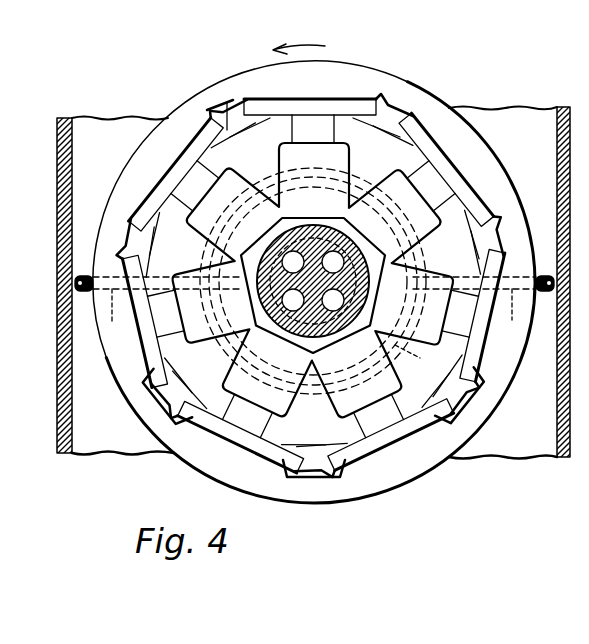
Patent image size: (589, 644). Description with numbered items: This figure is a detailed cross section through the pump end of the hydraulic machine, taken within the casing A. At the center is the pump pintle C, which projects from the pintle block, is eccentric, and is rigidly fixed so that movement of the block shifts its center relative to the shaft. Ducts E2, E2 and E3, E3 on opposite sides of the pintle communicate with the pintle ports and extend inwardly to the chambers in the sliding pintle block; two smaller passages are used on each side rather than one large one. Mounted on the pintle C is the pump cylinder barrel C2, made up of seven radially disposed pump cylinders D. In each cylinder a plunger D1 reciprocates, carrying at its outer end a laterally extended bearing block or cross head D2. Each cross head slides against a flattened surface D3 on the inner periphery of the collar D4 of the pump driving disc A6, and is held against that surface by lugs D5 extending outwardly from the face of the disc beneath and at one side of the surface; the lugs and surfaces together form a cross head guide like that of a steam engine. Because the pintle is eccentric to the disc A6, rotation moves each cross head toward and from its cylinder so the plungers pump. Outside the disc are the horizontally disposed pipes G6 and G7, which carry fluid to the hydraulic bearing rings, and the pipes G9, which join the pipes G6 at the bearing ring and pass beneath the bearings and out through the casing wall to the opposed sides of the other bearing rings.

The cylinder casing A is at (57, 198).
The pump driving disc A6 is at (340, 60).
The pump pintle C is at (283, 322).
The pump cylinder barrel C2 is at (313, 285).
The pump or motor cylinder D is at (200, 375).
The plunger D1 is at (355, 428).
The bearing block or cross head D2 is at (193, 150).
The flattened surface D3 is at (420, 117).
The collar D4 is at (202, 97).
The lug D5 is at (235, 117).
The duct E2 is at (352, 253).
The duct E3 is at (283, 255).
The pipe G6 is at (540, 293).
The pipe G7 is at (86, 292).
The pipe G9 is at (413, 353).